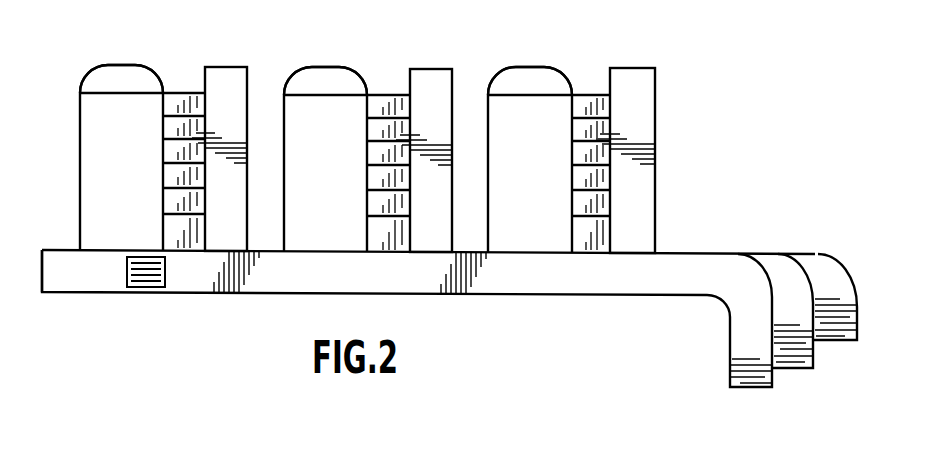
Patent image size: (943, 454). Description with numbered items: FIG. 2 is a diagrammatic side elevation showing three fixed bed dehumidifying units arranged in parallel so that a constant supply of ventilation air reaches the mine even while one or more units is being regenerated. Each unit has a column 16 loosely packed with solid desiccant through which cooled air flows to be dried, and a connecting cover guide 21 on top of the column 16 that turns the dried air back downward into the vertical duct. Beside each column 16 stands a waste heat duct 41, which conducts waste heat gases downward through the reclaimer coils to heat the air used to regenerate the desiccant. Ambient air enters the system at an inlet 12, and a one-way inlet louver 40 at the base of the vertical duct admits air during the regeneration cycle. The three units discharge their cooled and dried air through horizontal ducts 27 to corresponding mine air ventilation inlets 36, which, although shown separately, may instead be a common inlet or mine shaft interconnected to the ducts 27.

The inlet 12 is at (54, 249).
The column 16 is at (118, 177).
The connecting cover guide 21 is at (123, 78).
The horizontal duct 27 is at (680, 252).
The mine air ventilation inlet 36 is at (740, 347).
The inlet louver 40 is at (165, 268).
The waste heat duct 41 is at (226, 69).